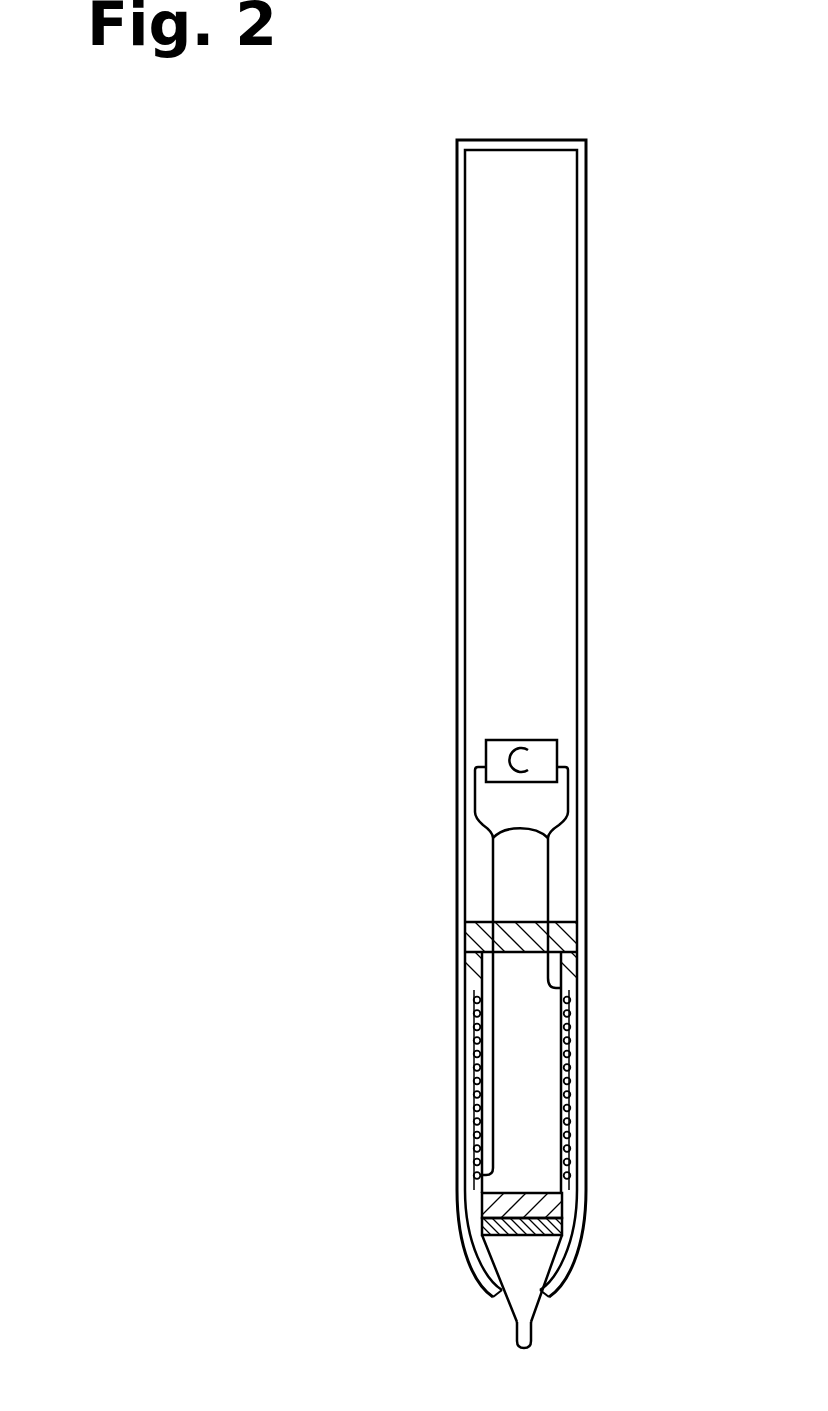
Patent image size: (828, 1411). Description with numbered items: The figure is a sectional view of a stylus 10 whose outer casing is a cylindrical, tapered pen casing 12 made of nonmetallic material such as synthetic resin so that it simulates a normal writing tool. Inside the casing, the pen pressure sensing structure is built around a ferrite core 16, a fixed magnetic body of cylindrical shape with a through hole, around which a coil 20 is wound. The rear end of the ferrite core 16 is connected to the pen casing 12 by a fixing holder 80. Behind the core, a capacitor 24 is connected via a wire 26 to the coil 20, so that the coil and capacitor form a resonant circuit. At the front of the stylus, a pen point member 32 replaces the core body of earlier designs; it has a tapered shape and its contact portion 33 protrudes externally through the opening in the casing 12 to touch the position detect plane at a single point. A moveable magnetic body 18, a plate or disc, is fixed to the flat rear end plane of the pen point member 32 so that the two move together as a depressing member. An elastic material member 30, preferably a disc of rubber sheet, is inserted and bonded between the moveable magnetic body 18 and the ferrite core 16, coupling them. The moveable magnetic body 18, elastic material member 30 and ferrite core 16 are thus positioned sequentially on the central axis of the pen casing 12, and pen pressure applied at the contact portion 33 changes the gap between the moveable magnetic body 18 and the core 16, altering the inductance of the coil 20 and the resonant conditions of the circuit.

The stylus 10 is at (386, 291).
The pen casing 12 is at (456, 573).
The capacitor 24 is at (548, 753).
The wire 26 is at (540, 825).
The fixing holder 80 is at (575, 934).
The ferrite core 16 is at (540, 1083).
The coil 20 is at (474, 1045).
The elastic material member 30 is at (563, 1197).
The moveable magnetic body 18 is at (563, 1222).
The pen point member 32 is at (527, 1268).
The contact portion 33 is at (520, 1352).